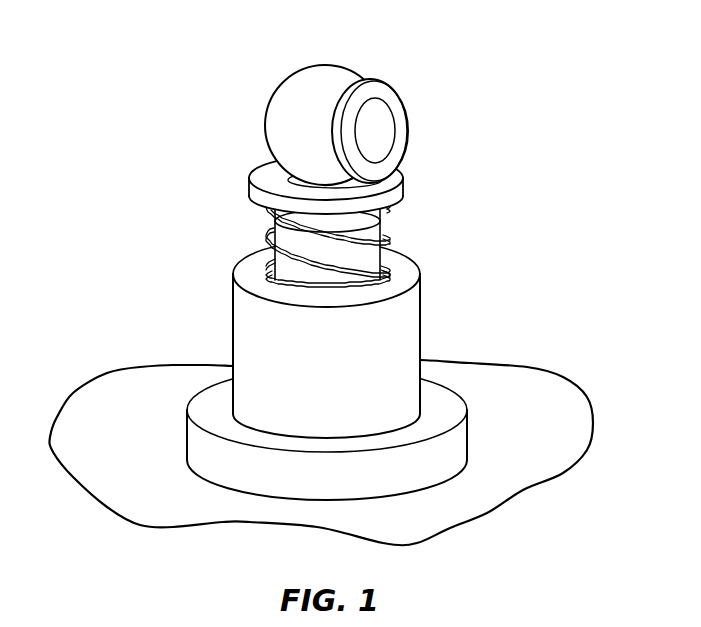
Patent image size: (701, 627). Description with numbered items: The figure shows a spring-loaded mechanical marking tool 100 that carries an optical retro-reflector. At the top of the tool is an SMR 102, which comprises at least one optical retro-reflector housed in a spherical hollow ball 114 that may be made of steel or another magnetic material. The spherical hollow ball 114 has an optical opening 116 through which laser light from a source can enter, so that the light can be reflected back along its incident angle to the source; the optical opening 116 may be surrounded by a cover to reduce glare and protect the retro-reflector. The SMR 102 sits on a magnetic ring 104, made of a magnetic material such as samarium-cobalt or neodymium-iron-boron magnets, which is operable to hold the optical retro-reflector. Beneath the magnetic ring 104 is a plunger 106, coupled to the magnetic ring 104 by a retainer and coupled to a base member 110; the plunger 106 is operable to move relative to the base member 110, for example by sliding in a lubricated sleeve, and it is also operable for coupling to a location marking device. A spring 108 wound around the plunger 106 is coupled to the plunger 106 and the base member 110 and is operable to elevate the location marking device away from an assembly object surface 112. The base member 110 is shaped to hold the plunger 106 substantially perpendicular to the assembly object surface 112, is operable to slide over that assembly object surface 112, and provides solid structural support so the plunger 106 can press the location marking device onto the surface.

The spring-loaded mechanical marking tool 100 is at (473, 63).
The SMR (optical retro-reflector) 102 is at (365, 78).
The magnetic ring 104 is at (400, 178).
The plunger 106 is at (381, 243).
The spring 108 is at (267, 240).
The base member 110 is at (233, 366).
The assembly object surface 112 is at (552, 397).
The spherical hollow ball 114 is at (298, 70).
The optical opening 116 is at (385, 135).